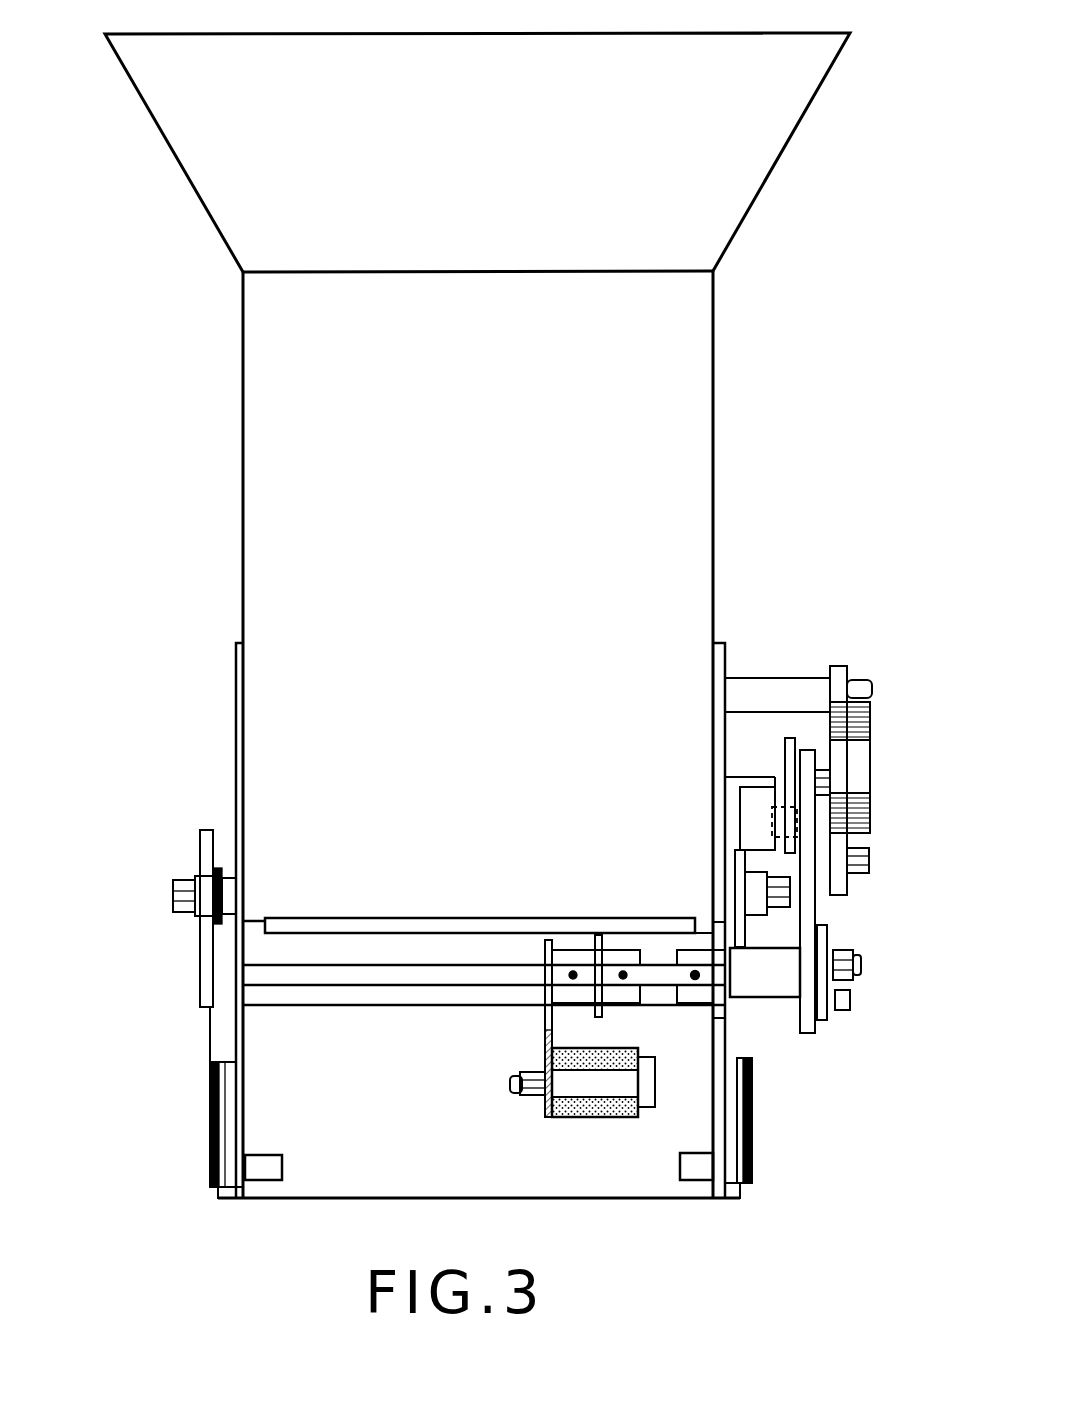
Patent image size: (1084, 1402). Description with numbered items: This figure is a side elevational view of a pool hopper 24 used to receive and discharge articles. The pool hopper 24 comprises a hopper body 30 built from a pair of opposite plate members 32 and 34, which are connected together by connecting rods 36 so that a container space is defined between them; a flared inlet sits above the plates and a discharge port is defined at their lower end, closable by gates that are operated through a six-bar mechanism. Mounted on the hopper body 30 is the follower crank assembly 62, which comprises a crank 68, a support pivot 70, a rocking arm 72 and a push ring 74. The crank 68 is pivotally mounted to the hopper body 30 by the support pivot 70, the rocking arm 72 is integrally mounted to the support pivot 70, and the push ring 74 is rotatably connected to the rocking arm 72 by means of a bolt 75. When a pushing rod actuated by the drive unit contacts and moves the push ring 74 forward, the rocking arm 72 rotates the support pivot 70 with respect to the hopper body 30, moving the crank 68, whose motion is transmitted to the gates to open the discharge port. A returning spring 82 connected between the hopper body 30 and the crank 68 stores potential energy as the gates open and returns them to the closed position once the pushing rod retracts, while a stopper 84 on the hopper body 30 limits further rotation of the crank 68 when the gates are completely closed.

The pool hopper 24 is at (214, 433).
The hopper body 30 is at (725, 1180).
The plate member 32 is at (722, 643).
The plate member 34 is at (236, 670).
The connecting rod 36 is at (282, 975).
The follower crank assembly 62 is at (778, 1005).
The crank 68 is at (808, 915).
The support pivot 70 is at (512, 987).
The rocking arm 72 is at (545, 1032).
The push ring 74 is at (598, 1117).
The bolt 75 is at (520, 1096).
The returning spring 82 is at (858, 760).
The stopper 84 is at (752, 787).